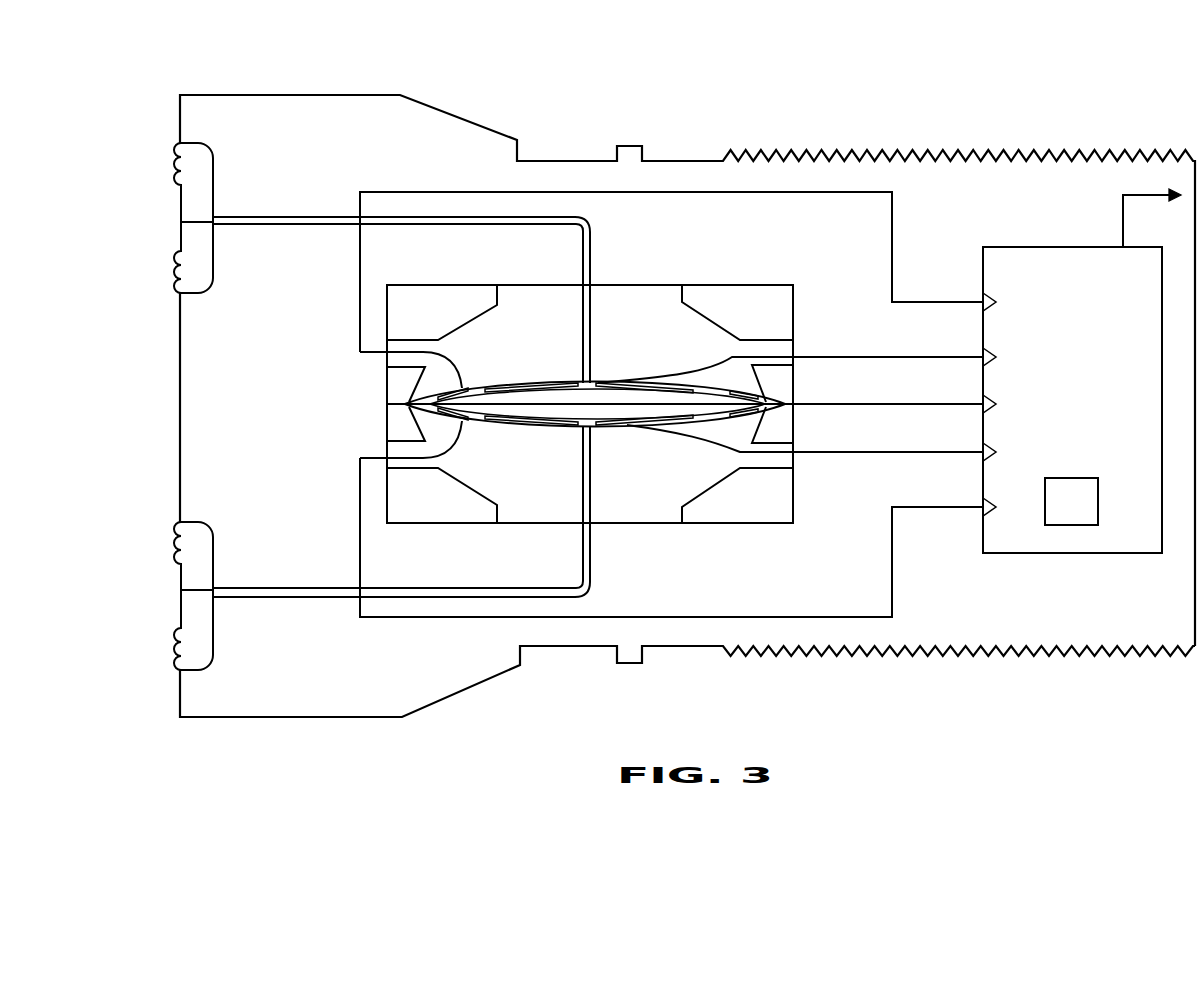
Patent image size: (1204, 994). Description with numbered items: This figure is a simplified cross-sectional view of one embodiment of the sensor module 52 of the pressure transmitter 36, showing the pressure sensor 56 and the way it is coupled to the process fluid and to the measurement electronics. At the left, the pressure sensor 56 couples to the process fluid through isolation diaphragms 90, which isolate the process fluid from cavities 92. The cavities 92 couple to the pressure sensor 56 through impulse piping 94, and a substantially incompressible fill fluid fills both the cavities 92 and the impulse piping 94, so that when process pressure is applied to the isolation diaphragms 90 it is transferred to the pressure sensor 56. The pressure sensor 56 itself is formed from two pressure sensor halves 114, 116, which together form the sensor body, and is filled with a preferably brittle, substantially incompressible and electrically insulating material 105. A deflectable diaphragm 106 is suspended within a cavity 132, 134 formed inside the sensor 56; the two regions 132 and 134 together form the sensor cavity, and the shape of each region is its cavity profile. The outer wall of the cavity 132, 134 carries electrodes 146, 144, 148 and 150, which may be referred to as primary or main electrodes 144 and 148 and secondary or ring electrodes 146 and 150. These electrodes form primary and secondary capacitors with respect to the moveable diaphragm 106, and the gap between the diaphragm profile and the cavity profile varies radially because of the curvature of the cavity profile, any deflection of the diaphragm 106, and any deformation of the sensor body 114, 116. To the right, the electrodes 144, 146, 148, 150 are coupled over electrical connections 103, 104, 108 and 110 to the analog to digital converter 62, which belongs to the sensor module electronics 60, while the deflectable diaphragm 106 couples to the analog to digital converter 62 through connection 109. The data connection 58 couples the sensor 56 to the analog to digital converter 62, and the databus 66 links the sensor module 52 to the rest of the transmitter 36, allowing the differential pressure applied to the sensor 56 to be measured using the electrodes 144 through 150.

The sensor module 52 is at (468, 120).
The pressure transmitter 36 is at (540, 660).
The cavities 92 is at (200, 160).
The isolation diaphragms 90 is at (180, 222).
The impulse piping 94 is at (592, 272).
The electrical connection 103 is at (950, 302).
The electrical connection 104 is at (898, 357).
The connection 109 is at (910, 404).
The electrical connection 108 is at (874, 452).
The electrical connection 110 is at (900, 507).
The sensor module electronics 60 is at (1058, 405).
The analog to digital converter 62 is at (1059, 513).
The databus 66 is at (1133, 202).
The data connection 58 is at (926, 578).
The pressure sensor 56 is at (738, 272).
The pressure sensor half 114 is at (796, 320).
The pressure sensor half 116 is at (796, 488).
The electrically insulating material 105 is at (481, 338).
The primary electrode 148 is at (535, 427).
The primary electrode 144 is at (568, 382).
The cavity 132 is at (597, 392).
The cavity 134 is at (604, 412).
The diaphragm 106 is at (585, 401).
The secondary electrode 146 is at (466, 388).
The secondary electrode 150 is at (457, 416).